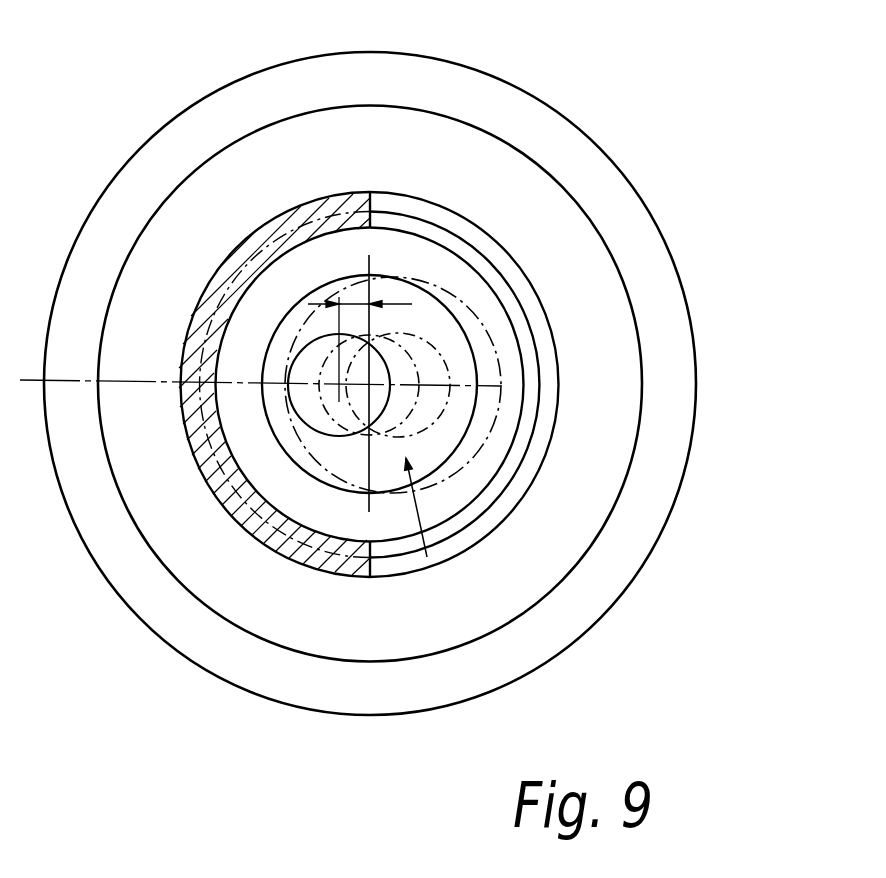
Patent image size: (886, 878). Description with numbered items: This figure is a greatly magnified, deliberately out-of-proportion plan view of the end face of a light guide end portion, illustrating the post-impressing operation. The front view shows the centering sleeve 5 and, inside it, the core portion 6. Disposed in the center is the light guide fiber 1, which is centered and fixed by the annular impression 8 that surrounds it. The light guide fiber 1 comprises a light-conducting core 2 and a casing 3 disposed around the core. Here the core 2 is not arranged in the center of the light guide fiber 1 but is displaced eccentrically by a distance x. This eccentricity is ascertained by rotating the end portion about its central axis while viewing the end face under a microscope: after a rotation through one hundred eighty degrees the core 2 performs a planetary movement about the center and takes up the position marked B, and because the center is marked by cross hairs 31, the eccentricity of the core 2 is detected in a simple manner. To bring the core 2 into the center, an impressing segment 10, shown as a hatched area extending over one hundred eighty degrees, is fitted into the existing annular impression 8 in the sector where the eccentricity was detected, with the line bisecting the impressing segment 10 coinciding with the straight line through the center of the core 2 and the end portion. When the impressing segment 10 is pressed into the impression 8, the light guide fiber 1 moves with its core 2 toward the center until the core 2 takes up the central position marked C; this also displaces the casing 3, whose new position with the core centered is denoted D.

The light guide fiber 1 is at (428, 503).
The light-conducting core 2 is at (318, 414).
The casing 3 is at (356, 470).
The centering sleeve 5 is at (485, 93).
The core portion 6 is at (237, 160).
The annular impression 8 is at (490, 250).
The impressing segment 10 is at (212, 473).
The cross hairs 31 is at (473, 392).
The core position after rotation B is at (437, 420).
The central core position C is at (370, 420).
The casing position with core centered D is at (500, 358).
The eccentric displacement distance x is at (360, 343).